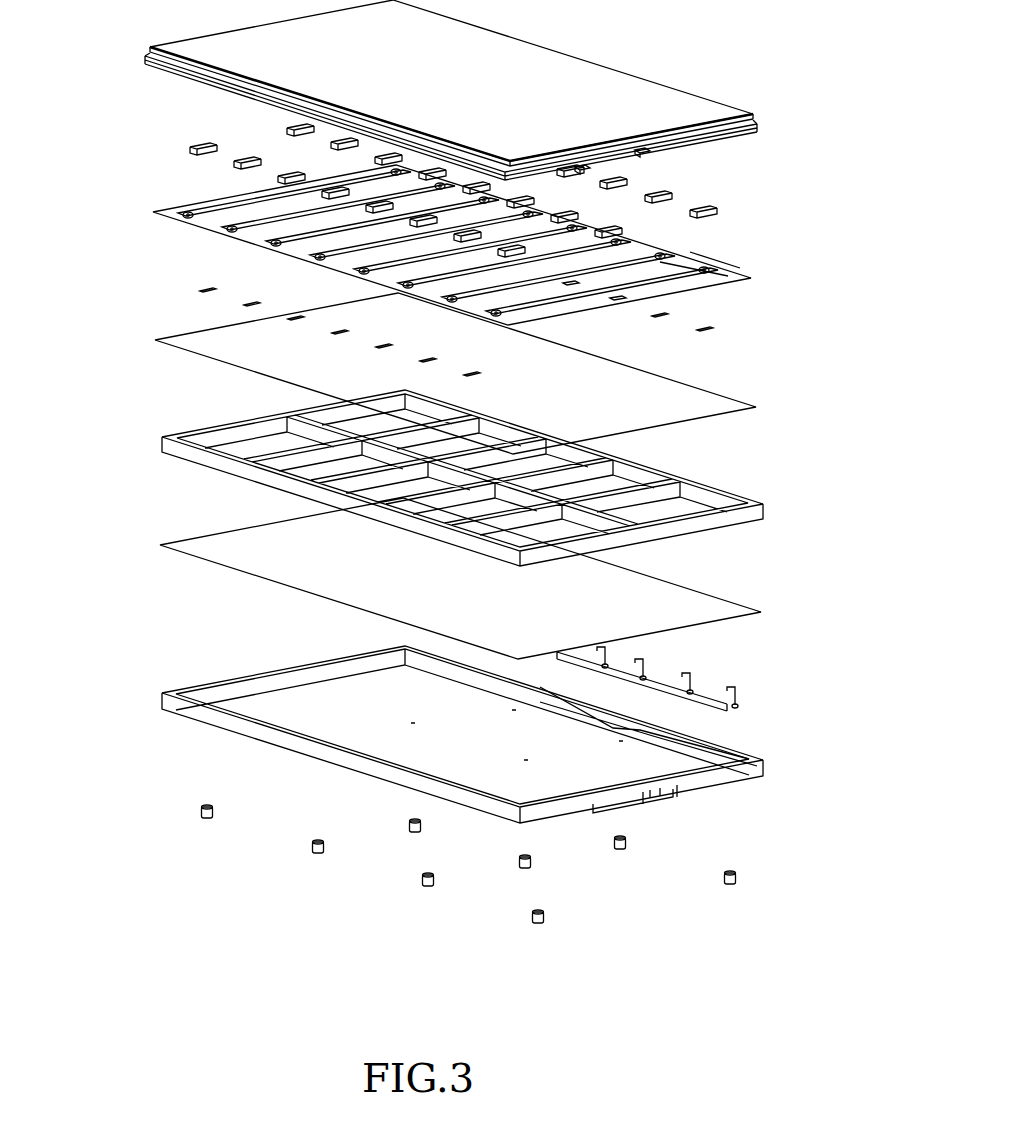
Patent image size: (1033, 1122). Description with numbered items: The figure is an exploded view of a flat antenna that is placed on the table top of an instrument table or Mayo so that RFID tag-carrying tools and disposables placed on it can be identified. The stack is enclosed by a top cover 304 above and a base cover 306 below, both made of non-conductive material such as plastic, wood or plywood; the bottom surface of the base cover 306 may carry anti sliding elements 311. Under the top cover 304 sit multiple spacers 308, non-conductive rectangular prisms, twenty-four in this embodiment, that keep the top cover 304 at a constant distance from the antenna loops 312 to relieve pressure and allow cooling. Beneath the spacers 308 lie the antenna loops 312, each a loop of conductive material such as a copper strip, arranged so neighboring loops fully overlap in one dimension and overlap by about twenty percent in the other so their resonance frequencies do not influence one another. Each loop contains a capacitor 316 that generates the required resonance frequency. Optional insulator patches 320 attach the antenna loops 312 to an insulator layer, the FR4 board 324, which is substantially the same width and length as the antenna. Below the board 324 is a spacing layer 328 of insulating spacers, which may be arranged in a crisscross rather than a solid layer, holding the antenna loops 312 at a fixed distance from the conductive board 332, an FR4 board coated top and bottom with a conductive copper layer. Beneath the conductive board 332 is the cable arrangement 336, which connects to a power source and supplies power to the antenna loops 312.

The top cover 304 is at (648, 92).
The spacers 308 is at (190, 149).
The capacitor 316 is at (184, 221).
The antenna loops 312 is at (703, 244).
The insulator patches 320 is at (714, 327).
The FR4 board 324 is at (176, 346).
The spacing layer 328 is at (178, 450).
The conductive board 332 is at (176, 545).
The base cover 306 is at (758, 783).
The cable arrangement 336 is at (742, 714).
The anti sliding elements 311 is at (202, 811).